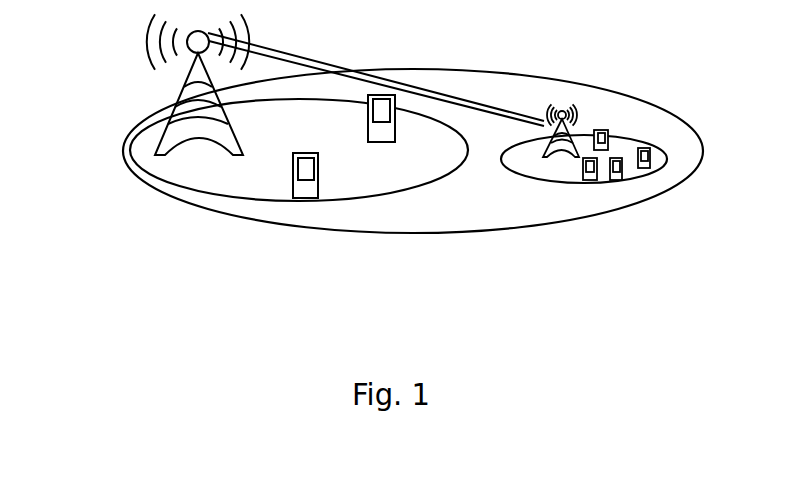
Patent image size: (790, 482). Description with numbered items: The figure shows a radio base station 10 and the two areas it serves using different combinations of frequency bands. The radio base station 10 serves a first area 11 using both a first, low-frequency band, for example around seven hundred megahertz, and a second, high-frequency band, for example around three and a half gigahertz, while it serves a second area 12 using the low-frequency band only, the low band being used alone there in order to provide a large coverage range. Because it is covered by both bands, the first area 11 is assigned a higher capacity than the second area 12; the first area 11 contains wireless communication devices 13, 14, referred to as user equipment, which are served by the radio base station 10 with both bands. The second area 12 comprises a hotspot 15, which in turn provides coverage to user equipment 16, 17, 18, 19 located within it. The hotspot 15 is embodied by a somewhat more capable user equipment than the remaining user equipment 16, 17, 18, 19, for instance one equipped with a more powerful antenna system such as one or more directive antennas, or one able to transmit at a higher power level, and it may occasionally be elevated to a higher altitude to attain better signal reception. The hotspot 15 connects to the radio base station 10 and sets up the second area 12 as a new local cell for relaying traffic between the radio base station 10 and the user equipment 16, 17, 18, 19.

The radio base station 10 is at (147, 42).
The first area 11 is at (216, 200).
The second area 12 is at (623, 137).
The wireless communication device 13 is at (303, 199).
The wireless communication device 14 is at (381, 94).
The hotspot 15 is at (562, 110).
The user equipment 16 is at (590, 181).
The user equipment 17 is at (617, 181).
The user equipment 18 is at (651, 148).
The user equipment 19 is at (604, 129).